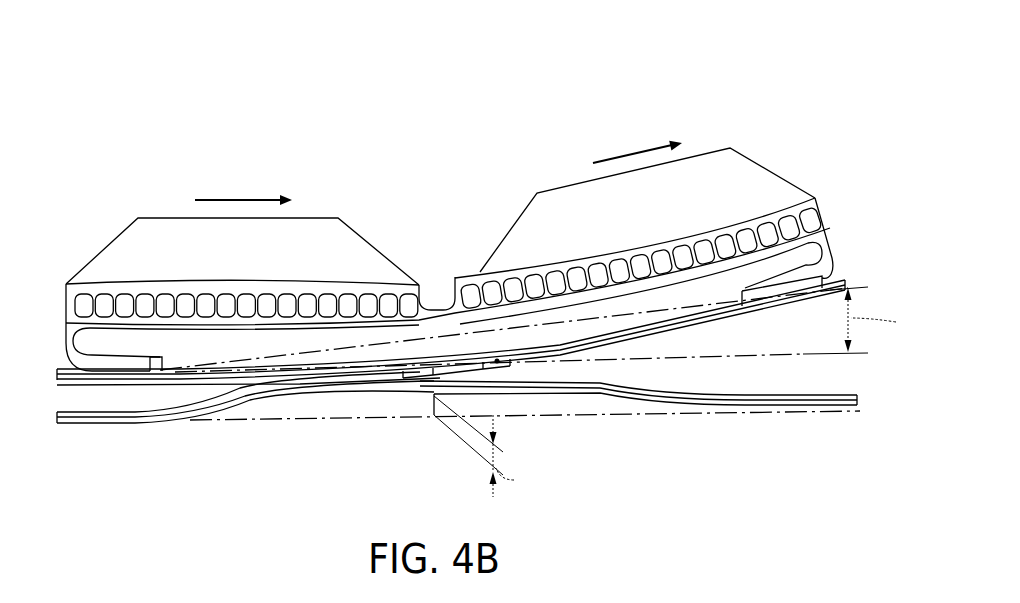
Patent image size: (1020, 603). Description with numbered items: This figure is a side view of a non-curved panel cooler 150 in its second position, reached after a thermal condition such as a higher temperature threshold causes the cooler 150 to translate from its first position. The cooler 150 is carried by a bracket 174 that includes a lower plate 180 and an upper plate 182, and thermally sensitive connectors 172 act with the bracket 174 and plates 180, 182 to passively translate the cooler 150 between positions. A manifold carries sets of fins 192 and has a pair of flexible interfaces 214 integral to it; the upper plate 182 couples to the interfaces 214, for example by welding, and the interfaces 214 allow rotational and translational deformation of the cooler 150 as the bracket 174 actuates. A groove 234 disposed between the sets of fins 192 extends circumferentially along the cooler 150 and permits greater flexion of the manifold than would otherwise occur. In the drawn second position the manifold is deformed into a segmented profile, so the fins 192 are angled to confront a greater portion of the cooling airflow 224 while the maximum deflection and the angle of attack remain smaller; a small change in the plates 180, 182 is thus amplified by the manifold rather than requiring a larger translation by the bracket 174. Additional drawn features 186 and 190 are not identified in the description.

The panel cooler 150 is at (184, 80).
The thermally sensitive connector 172 is at (797, 421).
The bracket 174 is at (133, 422).
The lower plate 180 is at (346, 400).
The upper plate 182 is at (458, 362).
The tabs 186 is at (414, 380).
The openings 190 is at (262, 305).
The fins 192 is at (363, 250).
The interfaces 214 is at (151, 357).
The cooling airflow 224 is at (238, 198).
The groove 234 is at (441, 275).